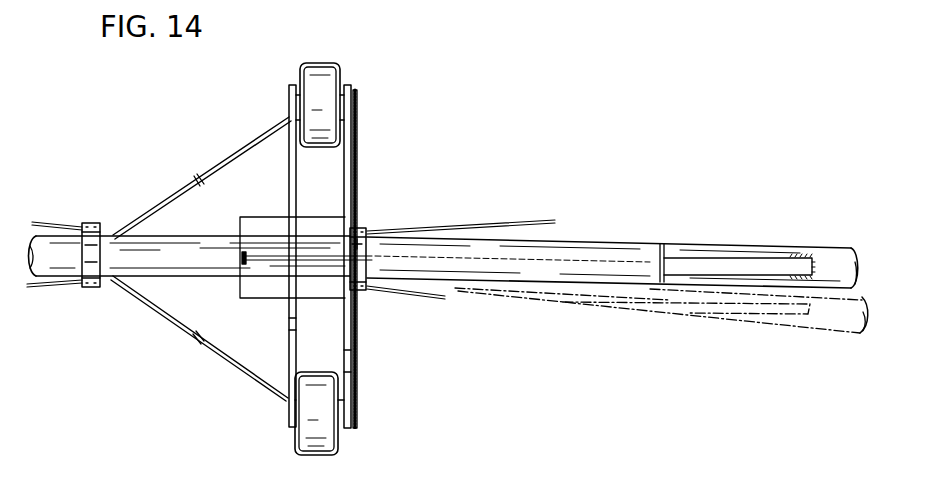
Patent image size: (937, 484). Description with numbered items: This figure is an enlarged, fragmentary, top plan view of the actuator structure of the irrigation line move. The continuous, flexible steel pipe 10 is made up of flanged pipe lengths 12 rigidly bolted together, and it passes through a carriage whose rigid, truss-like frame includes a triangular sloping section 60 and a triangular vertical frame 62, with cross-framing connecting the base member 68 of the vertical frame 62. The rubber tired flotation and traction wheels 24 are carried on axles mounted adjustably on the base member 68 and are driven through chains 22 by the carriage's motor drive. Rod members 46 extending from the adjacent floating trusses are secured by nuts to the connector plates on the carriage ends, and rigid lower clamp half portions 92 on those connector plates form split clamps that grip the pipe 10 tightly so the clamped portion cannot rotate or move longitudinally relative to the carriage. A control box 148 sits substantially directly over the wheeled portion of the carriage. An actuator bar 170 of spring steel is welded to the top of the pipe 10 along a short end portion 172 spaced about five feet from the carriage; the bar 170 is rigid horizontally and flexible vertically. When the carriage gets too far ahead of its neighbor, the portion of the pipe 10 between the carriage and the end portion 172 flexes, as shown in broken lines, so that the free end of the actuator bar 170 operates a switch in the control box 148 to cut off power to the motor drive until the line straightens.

The pipe 10 is at (141, 231).
The flanged pipe lengths 12 is at (598, 243).
The chains 22 is at (357, 186).
The wheels 24 is at (330, 63).
The rod members 46 is at (46, 223).
The sloping section 60 is at (197, 180).
The vertical frame 62 is at (344, 360).
The base member 68 is at (293, 320).
The lower clamp half portions 92 is at (86, 223).
The control boxes 148 is at (283, 217).
The actuator bar 170 is at (666, 244).
The end portion 172 is at (806, 258).